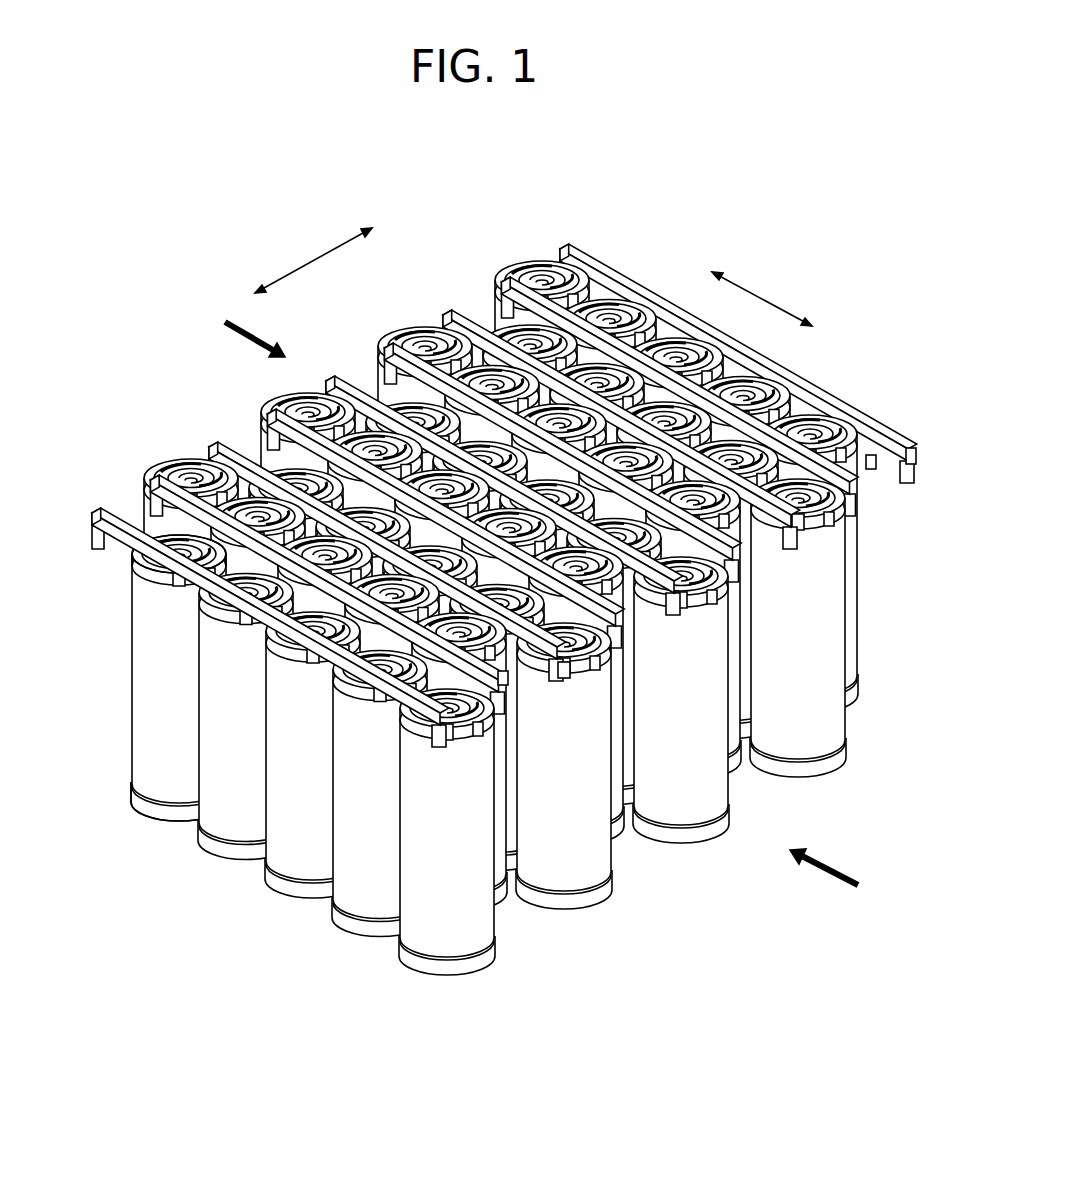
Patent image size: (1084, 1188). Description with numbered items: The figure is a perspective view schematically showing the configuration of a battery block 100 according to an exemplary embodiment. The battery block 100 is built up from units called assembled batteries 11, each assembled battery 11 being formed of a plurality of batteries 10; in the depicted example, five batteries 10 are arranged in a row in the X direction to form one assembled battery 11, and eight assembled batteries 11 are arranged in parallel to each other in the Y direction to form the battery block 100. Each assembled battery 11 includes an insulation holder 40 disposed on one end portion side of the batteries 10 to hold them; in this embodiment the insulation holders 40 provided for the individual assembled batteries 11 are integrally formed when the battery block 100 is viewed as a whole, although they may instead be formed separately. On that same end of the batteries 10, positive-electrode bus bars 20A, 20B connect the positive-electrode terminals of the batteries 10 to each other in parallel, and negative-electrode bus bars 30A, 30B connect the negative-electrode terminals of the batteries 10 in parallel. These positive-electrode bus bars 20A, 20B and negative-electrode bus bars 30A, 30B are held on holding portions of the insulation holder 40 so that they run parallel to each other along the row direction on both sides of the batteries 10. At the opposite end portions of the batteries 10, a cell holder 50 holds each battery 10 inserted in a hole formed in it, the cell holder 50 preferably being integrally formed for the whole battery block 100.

The battery block 100 is at (723, 188).
The battery 10 is at (147, 675).
The assembled battery 11 is at (503, 810).
The positive-electrode bus bar 20A is at (918, 448).
The positive-electrode bus bar 20B is at (873, 462).
The negative-electrode bus bar 30A is at (95, 508).
The negative-electrode bus bar 30B is at (150, 476).
The insulation holder 40 is at (145, 562).
The cell holder 50 is at (150, 815).